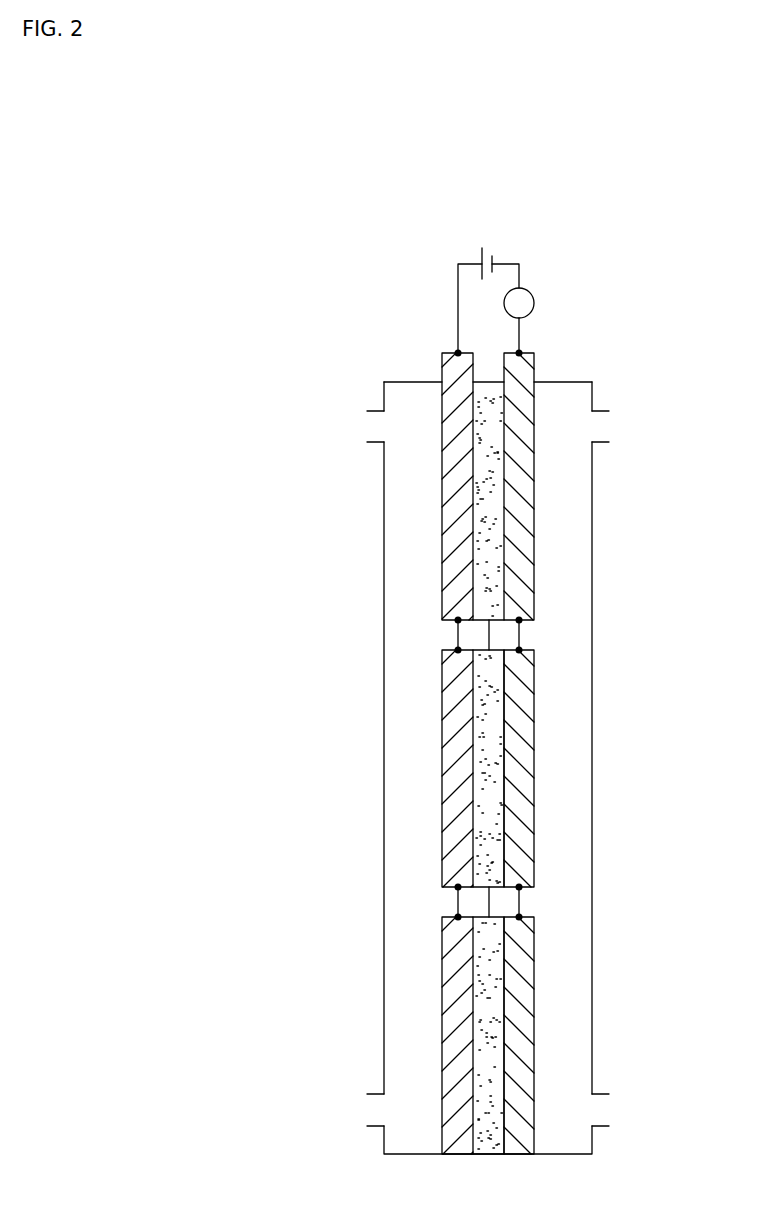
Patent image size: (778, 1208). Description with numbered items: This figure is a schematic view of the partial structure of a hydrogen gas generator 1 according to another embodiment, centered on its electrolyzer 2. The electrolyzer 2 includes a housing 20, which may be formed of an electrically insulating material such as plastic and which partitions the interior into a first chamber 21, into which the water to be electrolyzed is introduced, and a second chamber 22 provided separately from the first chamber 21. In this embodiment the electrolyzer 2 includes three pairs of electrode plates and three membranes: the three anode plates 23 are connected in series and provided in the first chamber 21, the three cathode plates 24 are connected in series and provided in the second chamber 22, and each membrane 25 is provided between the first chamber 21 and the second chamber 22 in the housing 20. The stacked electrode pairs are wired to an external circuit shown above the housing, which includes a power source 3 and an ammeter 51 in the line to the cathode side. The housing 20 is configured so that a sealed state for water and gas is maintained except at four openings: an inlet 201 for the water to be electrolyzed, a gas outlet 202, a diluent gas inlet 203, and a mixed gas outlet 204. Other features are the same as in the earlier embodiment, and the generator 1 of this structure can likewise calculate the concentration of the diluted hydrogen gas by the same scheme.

The hydrogen gas generator 1 is at (673, 253).
The electrolyzer 2 is at (590, 367).
The power source 3 is at (486, 246).
The housing 20 is at (592, 645).
The first chamber 21 is at (410, 820).
The second chamber 22 is at (565, 820).
The anode plate 23 is at (452, 512).
The cathode plate 24 is at (522, 518).
The membrane 25 is at (494, 551).
The ammeter 51 is at (525, 297).
The inlet 201 is at (377, 1096).
The gas outlet 202 is at (375, 413).
The diluent gas inlet 203 is at (601, 414).
The mixed gas outlet 204 is at (601, 1126).